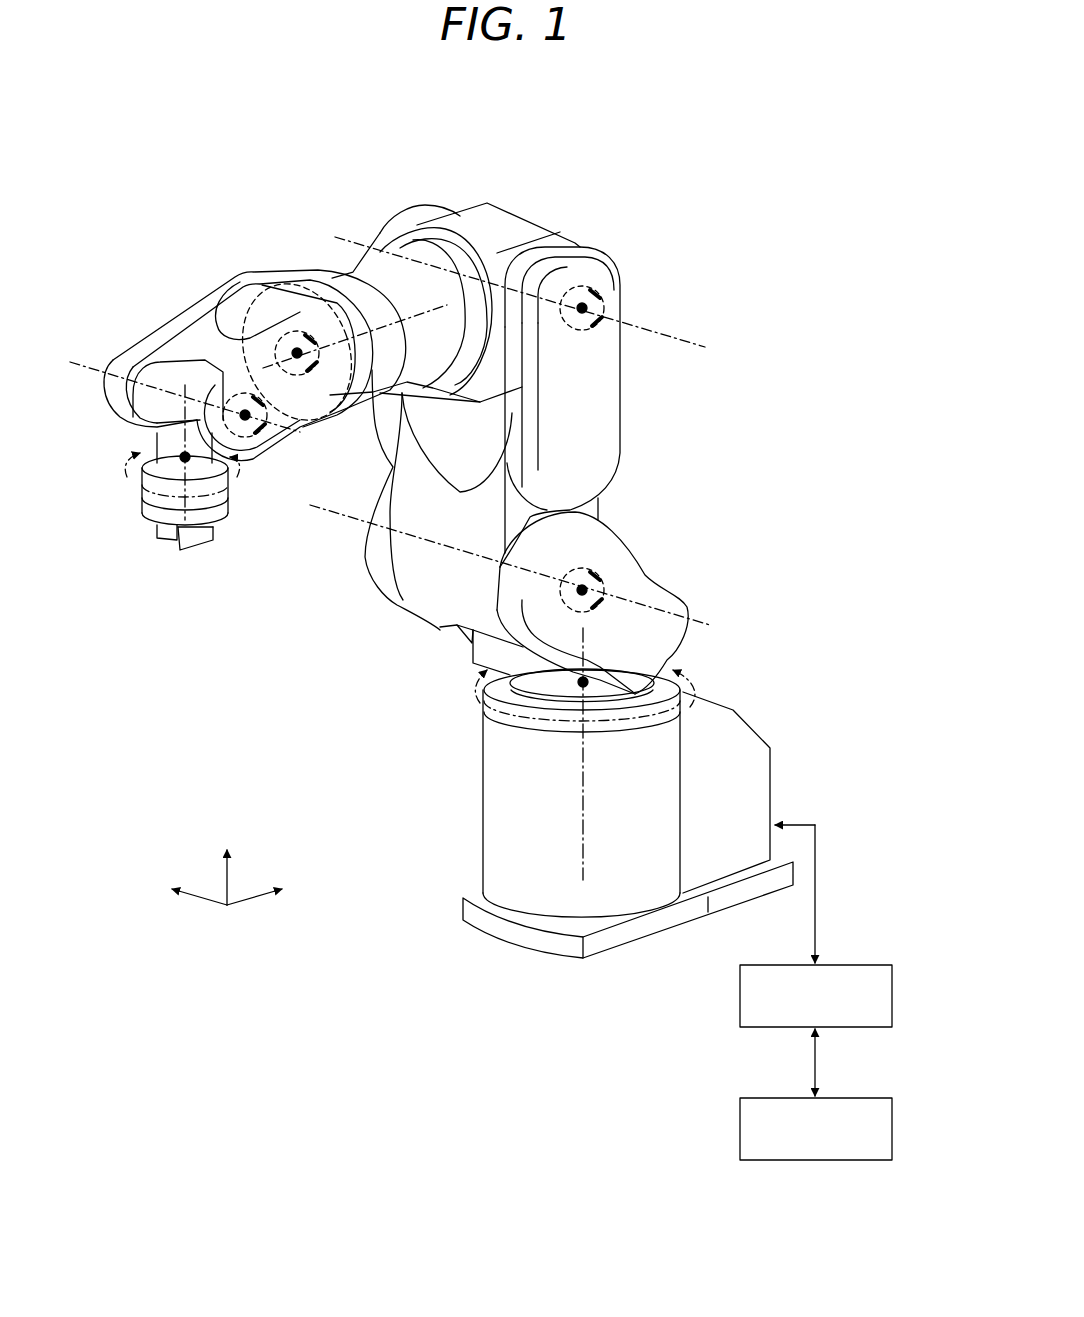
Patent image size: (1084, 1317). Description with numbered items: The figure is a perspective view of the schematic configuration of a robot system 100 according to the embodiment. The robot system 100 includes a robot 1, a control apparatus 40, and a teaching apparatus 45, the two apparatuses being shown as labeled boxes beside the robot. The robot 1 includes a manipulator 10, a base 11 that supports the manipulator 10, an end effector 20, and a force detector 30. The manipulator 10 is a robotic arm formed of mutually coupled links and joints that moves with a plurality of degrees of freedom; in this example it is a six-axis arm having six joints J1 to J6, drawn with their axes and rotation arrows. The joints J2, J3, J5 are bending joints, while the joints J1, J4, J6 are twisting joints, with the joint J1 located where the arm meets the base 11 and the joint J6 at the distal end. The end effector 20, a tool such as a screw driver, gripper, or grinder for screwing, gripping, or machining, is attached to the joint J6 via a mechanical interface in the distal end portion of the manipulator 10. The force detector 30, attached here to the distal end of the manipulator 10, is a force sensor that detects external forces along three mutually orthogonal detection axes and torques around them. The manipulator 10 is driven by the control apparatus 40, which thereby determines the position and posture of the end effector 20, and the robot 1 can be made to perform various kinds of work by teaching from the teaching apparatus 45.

The robot system 100 is at (718, 133).
The robot 1 is at (490, 803).
The manipulator 10 is at (612, 383).
The base 11 is at (763, 775).
The end effector 20 is at (163, 542).
The force detector 30 is at (140, 490).
The control apparatus 40 is at (895, 993).
The teaching apparatus 45 is at (895, 1126).
The joint J1 is at (697, 677).
The joint J2 is at (597, 562).
The joint J3 is at (597, 290).
The joint J4 is at (318, 298).
The joint J5 is at (243, 430).
The joint J6 is at (130, 453).